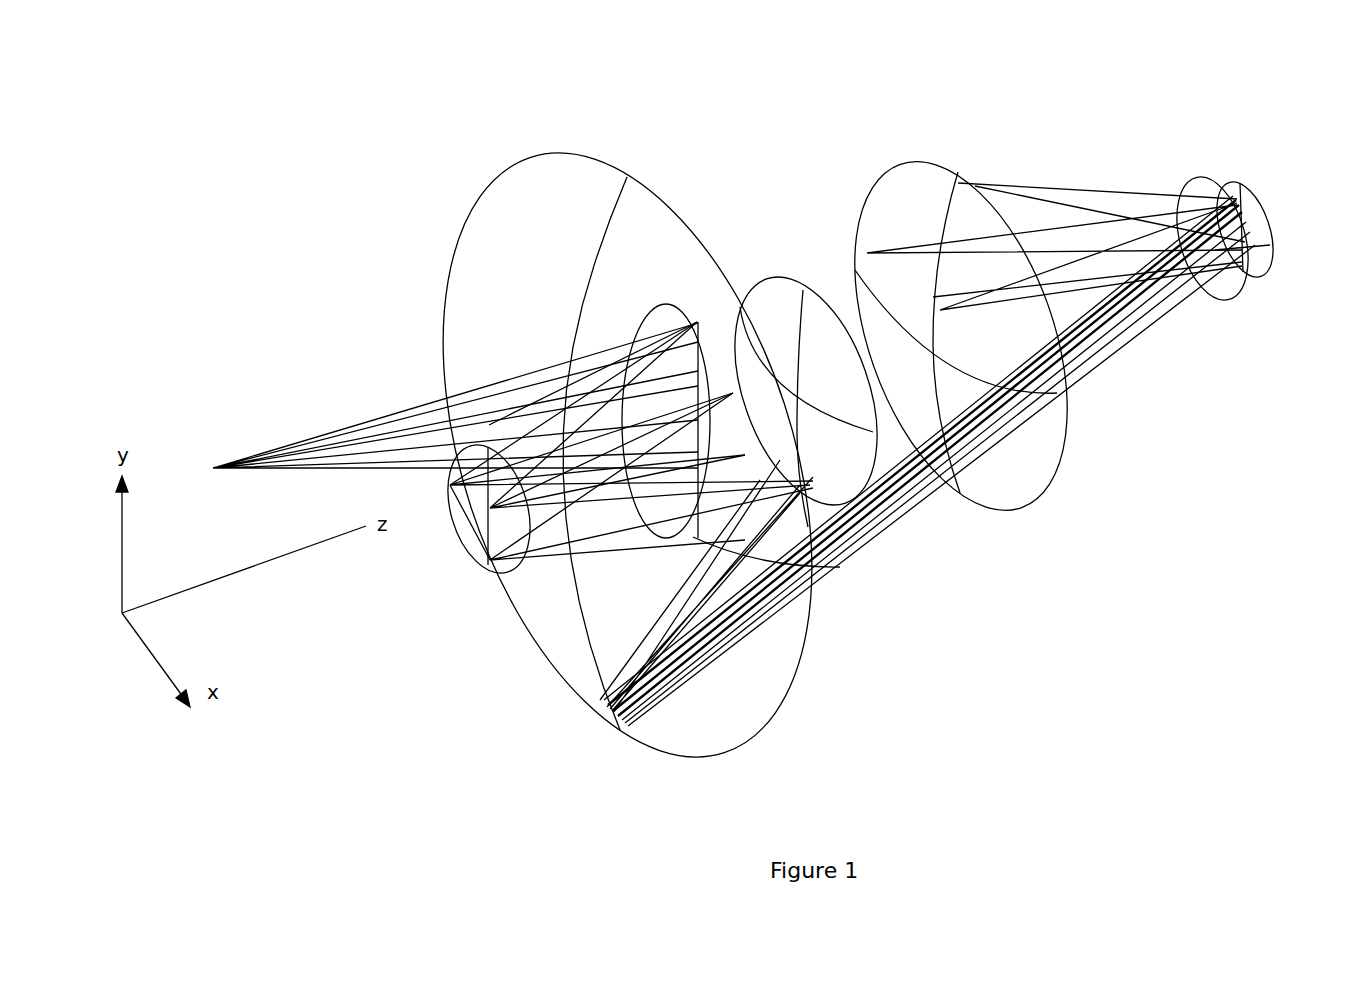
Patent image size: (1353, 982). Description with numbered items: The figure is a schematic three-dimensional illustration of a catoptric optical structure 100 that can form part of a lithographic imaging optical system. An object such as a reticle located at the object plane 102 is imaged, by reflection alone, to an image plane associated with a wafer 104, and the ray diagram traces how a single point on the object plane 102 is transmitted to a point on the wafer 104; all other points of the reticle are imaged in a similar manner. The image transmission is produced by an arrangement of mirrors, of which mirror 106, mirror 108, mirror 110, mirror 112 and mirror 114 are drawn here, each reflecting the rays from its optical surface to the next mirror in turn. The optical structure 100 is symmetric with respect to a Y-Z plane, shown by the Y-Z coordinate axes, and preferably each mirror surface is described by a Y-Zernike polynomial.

The optical structure 100 is at (662, 130).
The object plane 102 is at (213, 468).
The wafer 104 is at (1257, 200).
The mirror 106 is at (458, 537).
The mirror 108 is at (690, 230).
The mirror 110 is at (607, 675).
The mirror 112 is at (778, 280).
The mirror 114 is at (1193, 173).